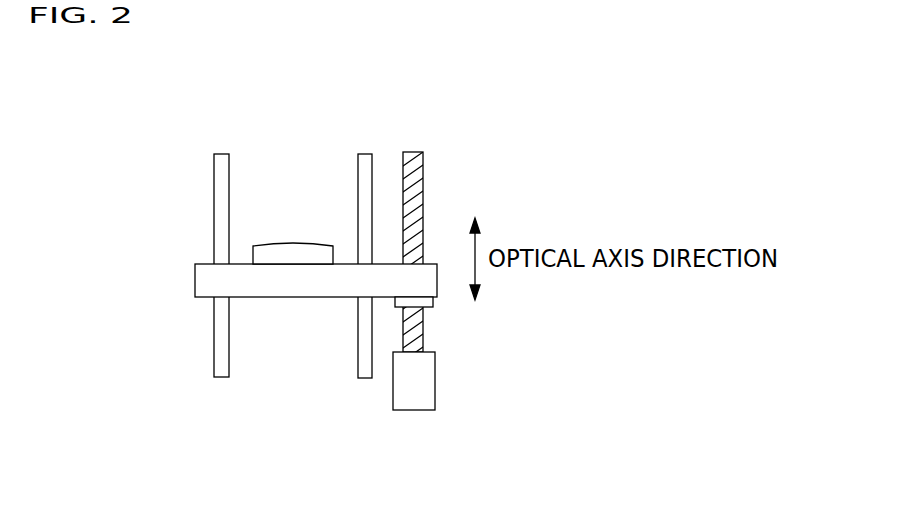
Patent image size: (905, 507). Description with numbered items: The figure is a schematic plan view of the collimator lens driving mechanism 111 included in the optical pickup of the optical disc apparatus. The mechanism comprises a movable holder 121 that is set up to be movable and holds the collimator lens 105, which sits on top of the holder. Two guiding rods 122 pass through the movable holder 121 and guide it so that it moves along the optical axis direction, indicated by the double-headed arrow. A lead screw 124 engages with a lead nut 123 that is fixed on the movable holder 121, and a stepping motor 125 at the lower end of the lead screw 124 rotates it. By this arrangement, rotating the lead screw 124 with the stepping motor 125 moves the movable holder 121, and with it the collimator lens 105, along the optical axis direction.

The collimator lens driving mechanism 111 is at (505, 56).
The collimator lens 105 is at (277, 245).
The movable holder 121 is at (195, 283).
The guiding rods 122 is at (214, 172).
The lead nut 123 is at (434, 309).
The lead screw 124 is at (426, 183).
The stepping motor 125 is at (413, 411).